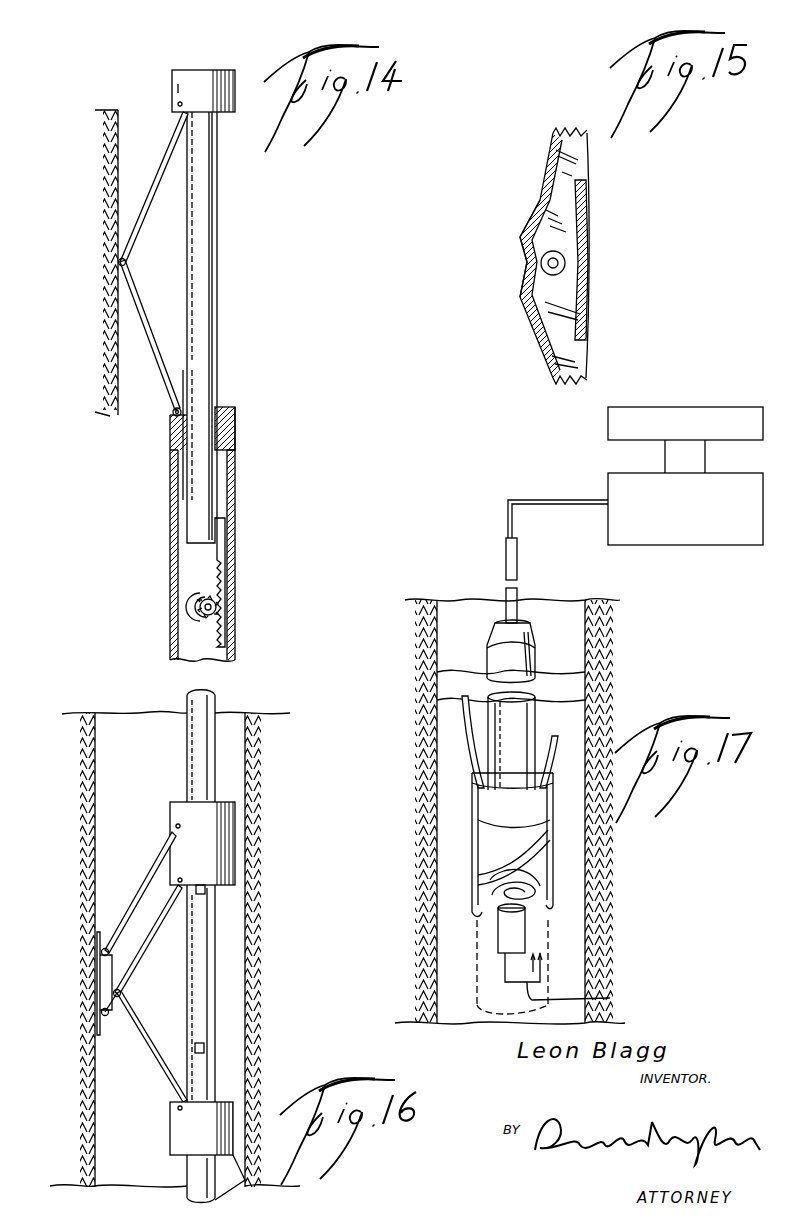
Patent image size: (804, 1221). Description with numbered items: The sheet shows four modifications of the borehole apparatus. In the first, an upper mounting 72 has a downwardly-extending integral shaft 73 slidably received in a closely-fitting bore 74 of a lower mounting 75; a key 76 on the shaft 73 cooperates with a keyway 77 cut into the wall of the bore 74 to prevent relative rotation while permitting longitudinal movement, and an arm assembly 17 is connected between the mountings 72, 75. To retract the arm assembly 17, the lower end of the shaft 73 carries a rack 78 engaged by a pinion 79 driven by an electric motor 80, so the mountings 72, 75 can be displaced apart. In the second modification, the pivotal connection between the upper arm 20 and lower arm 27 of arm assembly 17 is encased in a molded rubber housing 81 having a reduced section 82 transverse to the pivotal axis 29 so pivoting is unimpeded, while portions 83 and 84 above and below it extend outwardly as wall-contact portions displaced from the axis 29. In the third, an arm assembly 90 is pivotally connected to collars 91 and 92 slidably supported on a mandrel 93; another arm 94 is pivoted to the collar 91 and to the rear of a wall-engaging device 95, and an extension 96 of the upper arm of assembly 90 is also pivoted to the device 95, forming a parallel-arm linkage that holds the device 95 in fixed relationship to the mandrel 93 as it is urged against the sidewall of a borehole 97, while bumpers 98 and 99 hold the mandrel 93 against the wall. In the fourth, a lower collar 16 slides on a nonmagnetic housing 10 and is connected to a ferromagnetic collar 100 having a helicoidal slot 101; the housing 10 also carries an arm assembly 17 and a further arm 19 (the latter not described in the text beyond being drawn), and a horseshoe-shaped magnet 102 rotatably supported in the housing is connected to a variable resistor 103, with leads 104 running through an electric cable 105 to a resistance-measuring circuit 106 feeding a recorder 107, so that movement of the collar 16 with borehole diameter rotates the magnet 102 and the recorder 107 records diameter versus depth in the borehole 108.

In FIG. 14, the upper mounting 72 is at (174, 86).
In FIG. 14, the shaft 73 is at (217, 290).
In FIG. 14, the arm assembly 17 is at (148, 213).
In FIG. 15, the arm assembly 17 is at (590, 158).
In FIG. 17, the arm assembly 17 is at (460, 730).
In FIG. 14, the key 76 is at (187, 370).
In FIG. 14, the keyway 77 is at (180, 430).
In FIG. 14, the bore 74 is at (225, 420).
In FIG. 14, the lower mounting 75 is at (235, 442).
In FIG. 14, the rack 78 is at (217, 572).
In FIG. 14, the electric motor 80 is at (198, 594).
In FIG. 14, the pinion 79 is at (212, 607).
In FIG. 15, the molded rubber housing 81 is at (536, 196).
In FIG. 15, the upper housing portion 83 is at (520, 235).
In FIG. 15, the reduced section 82 is at (527, 263).
In FIG. 15, the lower housing portion 84 is at (520, 297).
In FIG. 15, the upper arm 20 is at (568, 190).
In FIG. 15, the pivotal axis 29 is at (556, 263).
In FIG. 15, the lower arm 27 is at (562, 328).
In FIG. 16, the mandrel 93 is at (215, 694).
In FIG. 16, the bumper 98 is at (245, 725).
In FIG. 16, the upper collar 91 is at (225, 826).
In FIG. 16, the arm 94 is at (148, 880).
In FIG. 16, the wall-engaging device 95 is at (97, 948).
In FIG. 16, the extension 96 is at (103, 1002).
In FIG. 16, the arm assembly 90 is at (136, 972).
In FIG. 16, the borehole 97 is at (96, 1092).
In FIG. 16, the lower collar 92 is at (170, 1136).
In FIG. 16, the bumper 99 is at (228, 1166).
In FIG. 17, the recorder 107 is at (692, 406).
In FIG. 17, the resistance-measuring circuit 106 is at (640, 473).
In FIG. 17, the leads 104 is at (506, 518).
In FIG. 17, the electric cable 105 is at (506, 555).
In FIG. 17, the borehole 108 is at (585, 632).
In FIG. 17, the housing 10 is at (535, 697).
In FIG. 17, the arm 19 is at (562, 740).
In FIG. 17, the lower collar 16 is at (472, 794).
In FIG. 17, the ferromagnetic collar 100 is at (478, 840).
In FIG. 17, the helicoidal slot 101 is at (480, 866).
In FIG. 17, the horseshoe-shaped magnet 102 is at (535, 895).
In FIG. 17, the variable resistor 103 is at (527, 932).